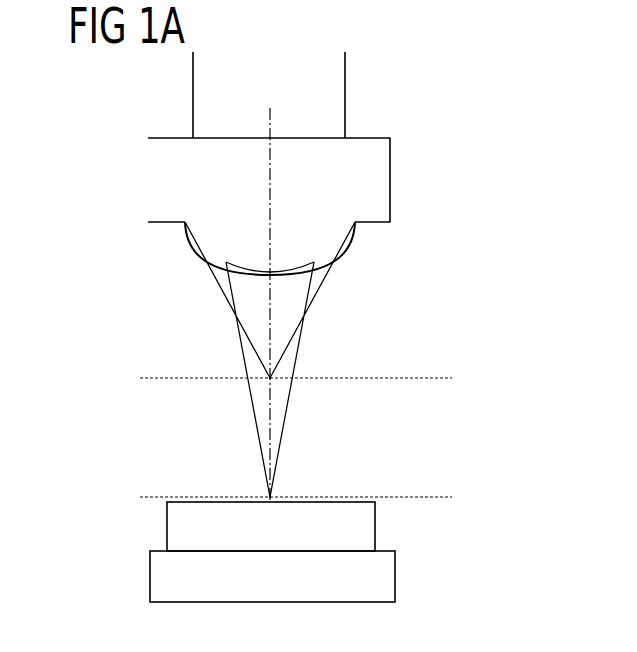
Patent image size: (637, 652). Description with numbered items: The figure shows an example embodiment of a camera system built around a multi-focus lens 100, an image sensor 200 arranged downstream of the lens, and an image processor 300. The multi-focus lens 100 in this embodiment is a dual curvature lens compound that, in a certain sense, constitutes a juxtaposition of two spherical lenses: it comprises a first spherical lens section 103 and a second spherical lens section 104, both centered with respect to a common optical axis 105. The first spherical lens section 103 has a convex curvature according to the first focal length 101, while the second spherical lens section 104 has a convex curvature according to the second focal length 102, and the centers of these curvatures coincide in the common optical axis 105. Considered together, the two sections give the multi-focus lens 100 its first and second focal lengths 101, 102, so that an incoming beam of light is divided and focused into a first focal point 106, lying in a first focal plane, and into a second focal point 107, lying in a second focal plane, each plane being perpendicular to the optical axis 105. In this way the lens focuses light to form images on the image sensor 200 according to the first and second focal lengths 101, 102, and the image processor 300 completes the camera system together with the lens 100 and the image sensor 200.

The multi-focus lens 100 is at (390, 178).
The first focal length 101 is at (435, 378).
The second focal length 102 is at (435, 497).
The first spherical lens section 103 is at (342, 243).
The second spherical lens section 104 is at (236, 243).
The common optical axis 105 is at (271, 114).
The first focal point 106 is at (270, 378).
The second focal point 107 is at (270, 497).
The image sensor 200 is at (167, 523).
The image processor 300 is at (150, 574).